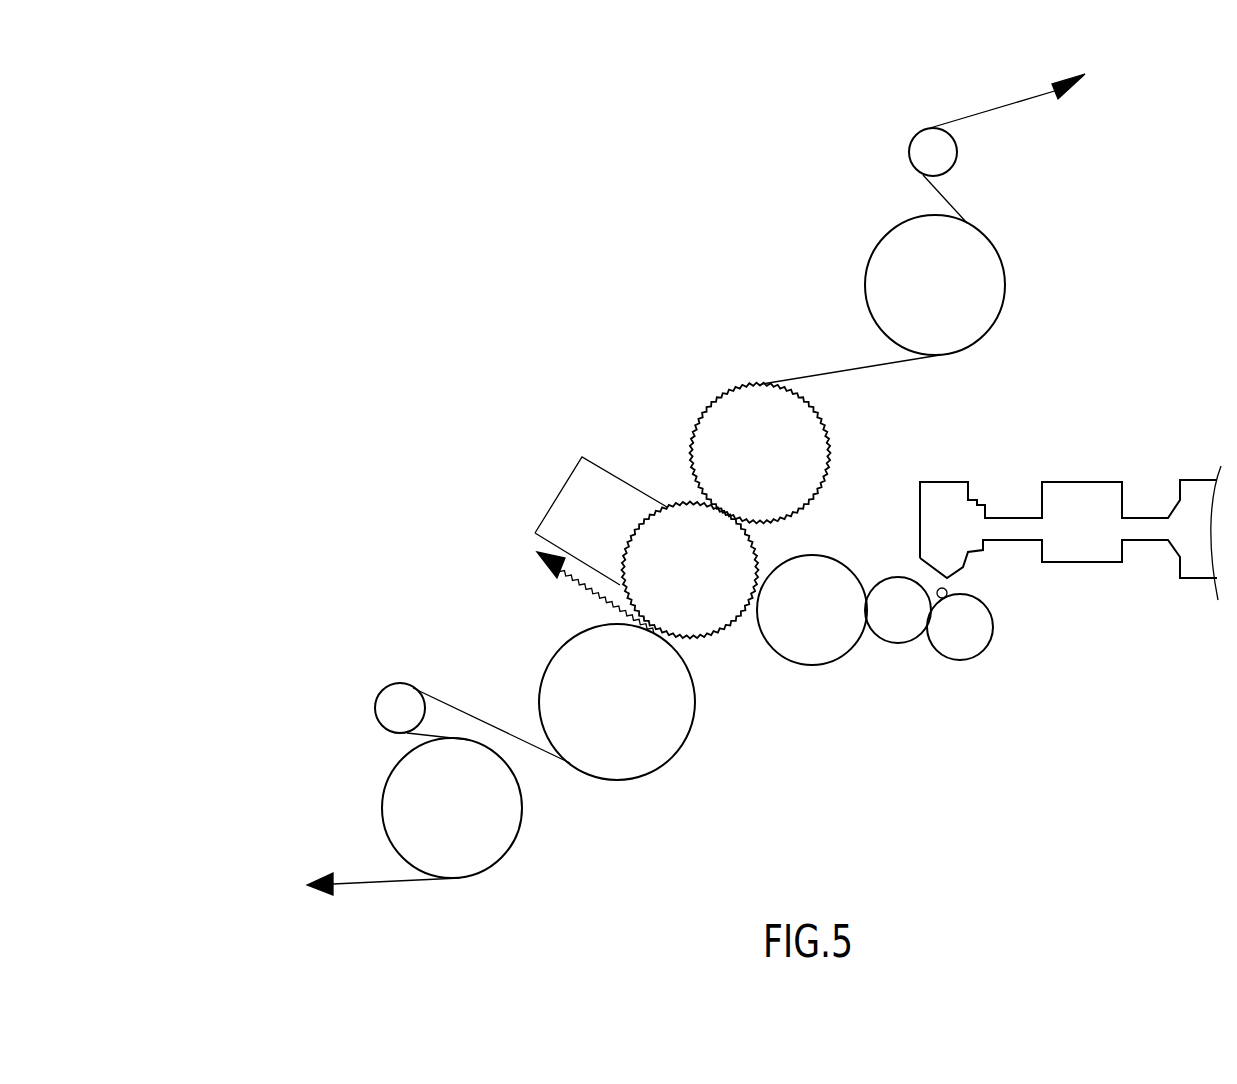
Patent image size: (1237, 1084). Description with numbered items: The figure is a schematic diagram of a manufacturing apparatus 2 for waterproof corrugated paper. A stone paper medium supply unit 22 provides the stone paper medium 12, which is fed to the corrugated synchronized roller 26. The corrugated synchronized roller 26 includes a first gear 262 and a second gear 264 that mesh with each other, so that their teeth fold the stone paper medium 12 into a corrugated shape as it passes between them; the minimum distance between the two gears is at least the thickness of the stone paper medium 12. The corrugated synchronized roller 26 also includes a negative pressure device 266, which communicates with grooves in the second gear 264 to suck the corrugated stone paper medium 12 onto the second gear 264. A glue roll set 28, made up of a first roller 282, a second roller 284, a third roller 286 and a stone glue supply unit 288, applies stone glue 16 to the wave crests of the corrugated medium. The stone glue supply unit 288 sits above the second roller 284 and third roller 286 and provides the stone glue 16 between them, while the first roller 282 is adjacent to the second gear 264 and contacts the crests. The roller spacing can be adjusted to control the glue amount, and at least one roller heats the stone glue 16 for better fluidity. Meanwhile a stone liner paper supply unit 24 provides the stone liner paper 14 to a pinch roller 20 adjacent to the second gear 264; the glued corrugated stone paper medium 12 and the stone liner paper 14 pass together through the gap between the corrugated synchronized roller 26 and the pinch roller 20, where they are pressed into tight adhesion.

The manufacturing apparatus 2 is at (390, 258).
The stone paper medium 12 is at (991, 108).
The stone liner paper 14 is at (397, 883).
The stone glue 16 is at (938, 588).
The pinch roller 20 is at (593, 673).
The stone paper medium supply unit 22 is at (895, 199).
The stone liner paper supply unit 24 is at (332, 841).
The corrugated synchronized roller 26 is at (541, 329).
The glue roll set 28 is at (1192, 805).
The first gear 262 is at (730, 453).
The second gear 264 is at (692, 545).
The negative pressure device 266 is at (572, 515).
The first roller 282 is at (827, 633).
The second roller 284 is at (902, 628).
The third roller 286 is at (972, 634).
The stone glue supply unit 288 is at (963, 538).